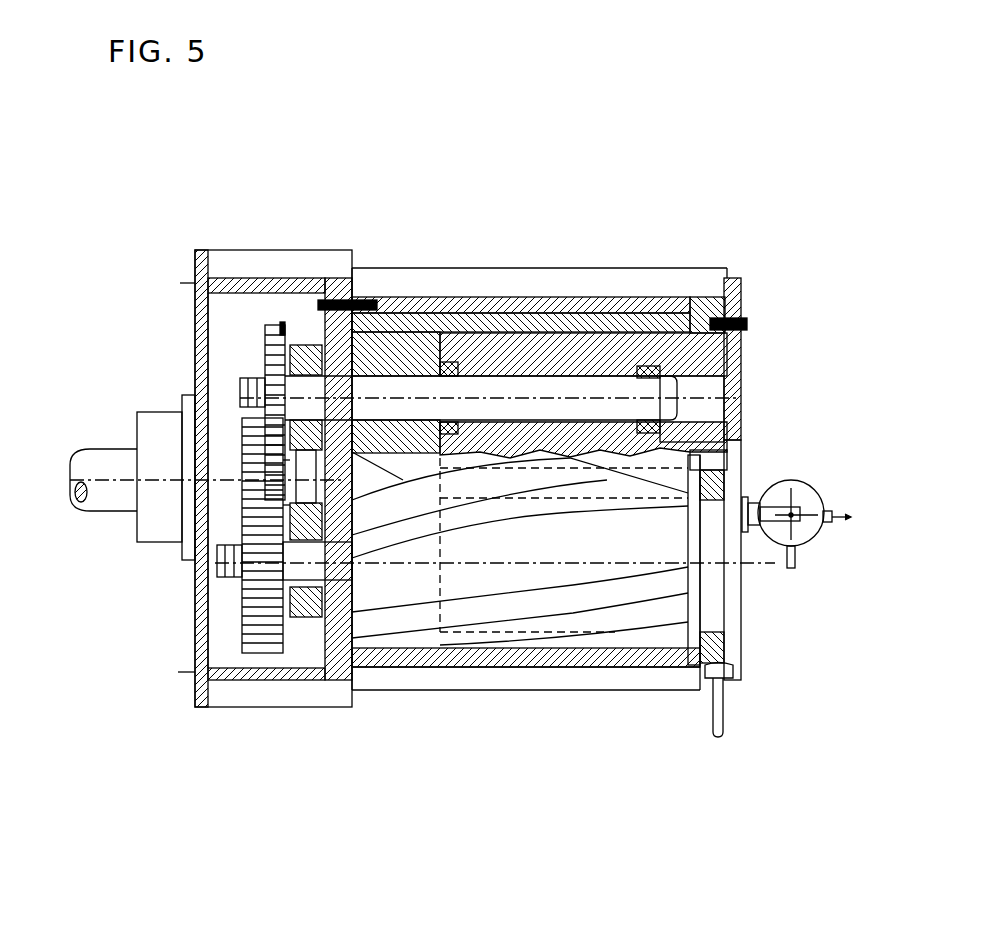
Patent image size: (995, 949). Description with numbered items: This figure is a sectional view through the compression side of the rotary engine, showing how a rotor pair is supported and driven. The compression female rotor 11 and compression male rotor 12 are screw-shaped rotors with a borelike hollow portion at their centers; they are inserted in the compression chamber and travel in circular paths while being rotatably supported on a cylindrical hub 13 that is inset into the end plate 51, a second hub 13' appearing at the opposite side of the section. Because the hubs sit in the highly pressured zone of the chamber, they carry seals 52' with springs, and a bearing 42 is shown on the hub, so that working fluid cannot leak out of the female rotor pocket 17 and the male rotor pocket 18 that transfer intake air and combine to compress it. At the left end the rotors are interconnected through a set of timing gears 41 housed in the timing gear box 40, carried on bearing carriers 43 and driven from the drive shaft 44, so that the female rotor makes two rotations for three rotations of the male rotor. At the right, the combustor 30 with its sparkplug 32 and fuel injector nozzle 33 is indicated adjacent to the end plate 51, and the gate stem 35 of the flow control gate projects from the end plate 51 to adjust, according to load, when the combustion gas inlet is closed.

The compression female rotor 11 is at (668, 637).
The compression male rotor 12 is at (597, 312).
The cylindrical hub 13 is at (507, 498).
The end plate 13' is at (778, 530).
The female rotor pocket 17 is at (487, 578).
The male rotor pocket 18 is at (628, 318).
The combustor 30 is at (812, 546).
The sparkplug 32 is at (836, 500).
The fuel injector nozzle 33 is at (797, 572).
The gate stem 35 is at (731, 740).
The timing gear box 40 is at (284, 246).
The timing gears 41 is at (258, 330).
The bearing 42 is at (676, 425).
The bearing carrier / coupling 43 is at (148, 552).
The drive shaft 44 is at (110, 517).
The end plate 51 is at (719, 289).
The bearing 52' is at (501, 311).